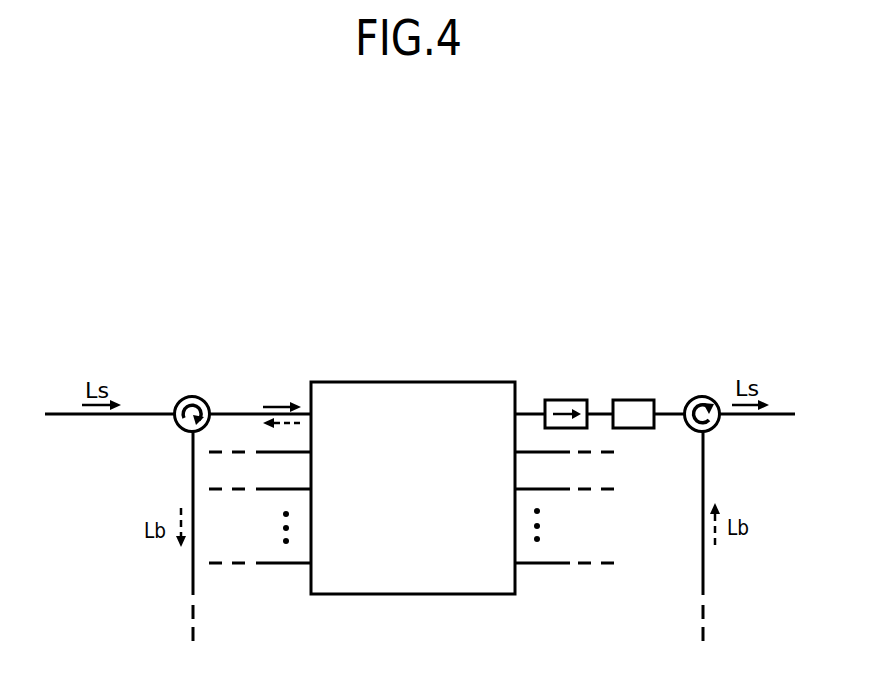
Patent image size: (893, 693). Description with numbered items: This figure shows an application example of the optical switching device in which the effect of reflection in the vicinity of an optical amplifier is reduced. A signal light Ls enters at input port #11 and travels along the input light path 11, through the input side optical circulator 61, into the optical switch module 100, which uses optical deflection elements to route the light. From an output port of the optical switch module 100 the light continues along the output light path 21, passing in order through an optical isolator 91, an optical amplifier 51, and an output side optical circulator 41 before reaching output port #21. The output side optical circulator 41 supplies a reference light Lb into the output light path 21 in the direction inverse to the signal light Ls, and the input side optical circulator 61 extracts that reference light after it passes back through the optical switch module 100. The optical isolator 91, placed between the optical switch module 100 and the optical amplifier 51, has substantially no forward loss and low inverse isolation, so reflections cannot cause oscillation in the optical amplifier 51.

The input light path 11 is at (64, 414).
The input side optical circulator 61 is at (197, 397).
The optical switch module 100 is at (425, 382).
The optical isolator 91 is at (568, 400).
The optical amplifier 51 is at (637, 400).
The output side optical circulator 41 is at (702, 396).
The output light path 21 is at (784, 414).